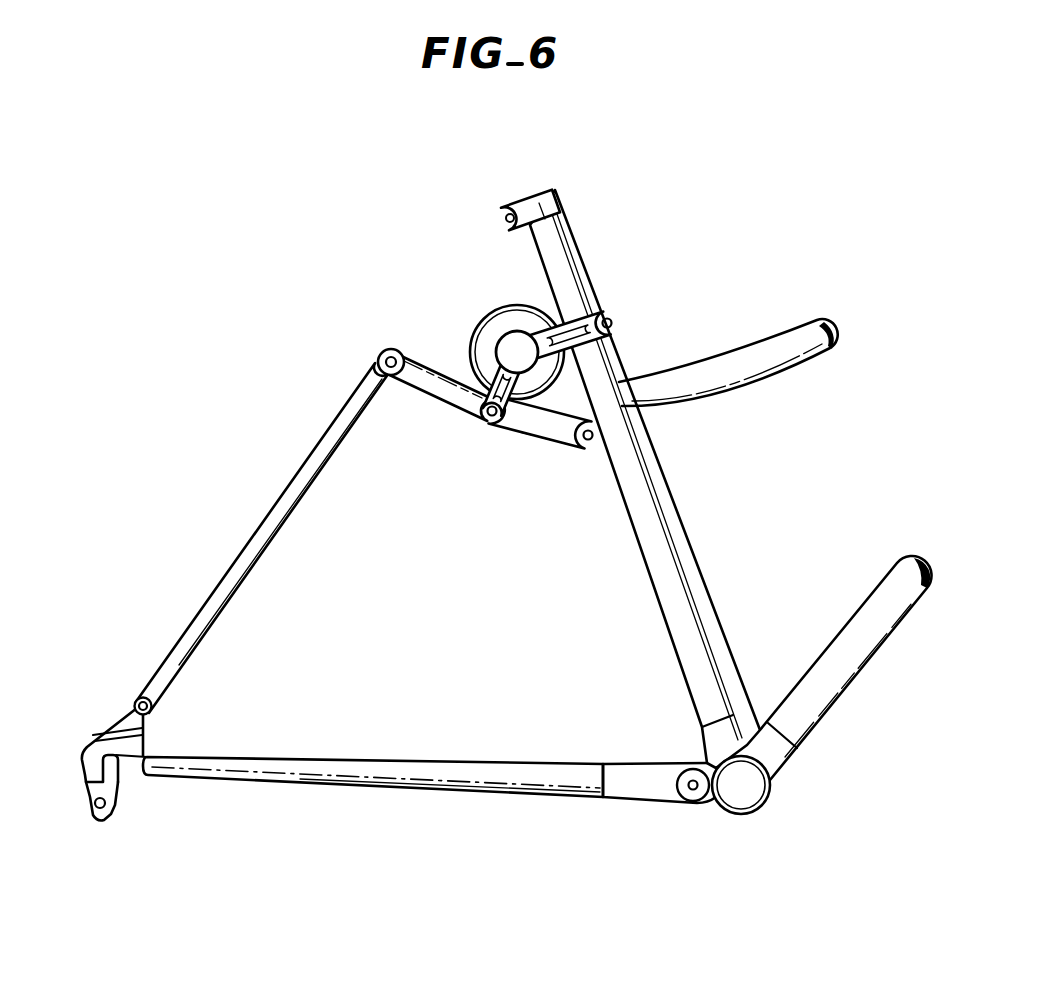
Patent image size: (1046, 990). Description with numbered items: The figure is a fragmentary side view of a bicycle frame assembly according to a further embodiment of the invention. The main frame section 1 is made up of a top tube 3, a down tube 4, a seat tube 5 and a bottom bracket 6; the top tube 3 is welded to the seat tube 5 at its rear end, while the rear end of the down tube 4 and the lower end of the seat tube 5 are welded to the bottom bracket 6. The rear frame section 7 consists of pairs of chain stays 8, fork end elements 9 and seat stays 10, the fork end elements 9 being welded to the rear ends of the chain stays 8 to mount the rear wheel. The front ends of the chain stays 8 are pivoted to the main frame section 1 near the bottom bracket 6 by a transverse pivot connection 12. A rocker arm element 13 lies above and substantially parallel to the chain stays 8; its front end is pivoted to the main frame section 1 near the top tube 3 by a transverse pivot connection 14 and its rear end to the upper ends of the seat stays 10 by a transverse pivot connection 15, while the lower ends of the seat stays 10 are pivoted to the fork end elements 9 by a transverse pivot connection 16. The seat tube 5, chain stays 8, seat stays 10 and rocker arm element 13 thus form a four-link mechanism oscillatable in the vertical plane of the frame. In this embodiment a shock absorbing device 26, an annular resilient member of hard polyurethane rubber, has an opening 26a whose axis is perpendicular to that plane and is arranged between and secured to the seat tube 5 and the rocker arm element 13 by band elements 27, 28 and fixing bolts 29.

The main frame section 1 is at (642, 602).
The top tube 3 is at (762, 365).
The down tube 4 is at (828, 708).
The seat tube 5 is at (683, 594).
The bottom bracket 6 is at (775, 768).
The rear frame section 7 is at (268, 787).
The chain stays 8 is at (418, 781).
The fork end elements 9 is at (131, 764).
The seat stays 10 is at (287, 500).
The transverse pivot connection 12 is at (690, 794).
The rocker arm element 13 is at (443, 407).
The transverse pivot connection 14 is at (596, 433).
The transverse pivot connection 15 is at (380, 357).
The transverse pivot connection 16 is at (141, 700).
The shock absorbing device 26 is at (497, 307).
The opening 26a is at (507, 347).
The band element 27 is at (595, 313).
The band element 28 is at (508, 420).
The fixing bolts 29 is at (615, 320).